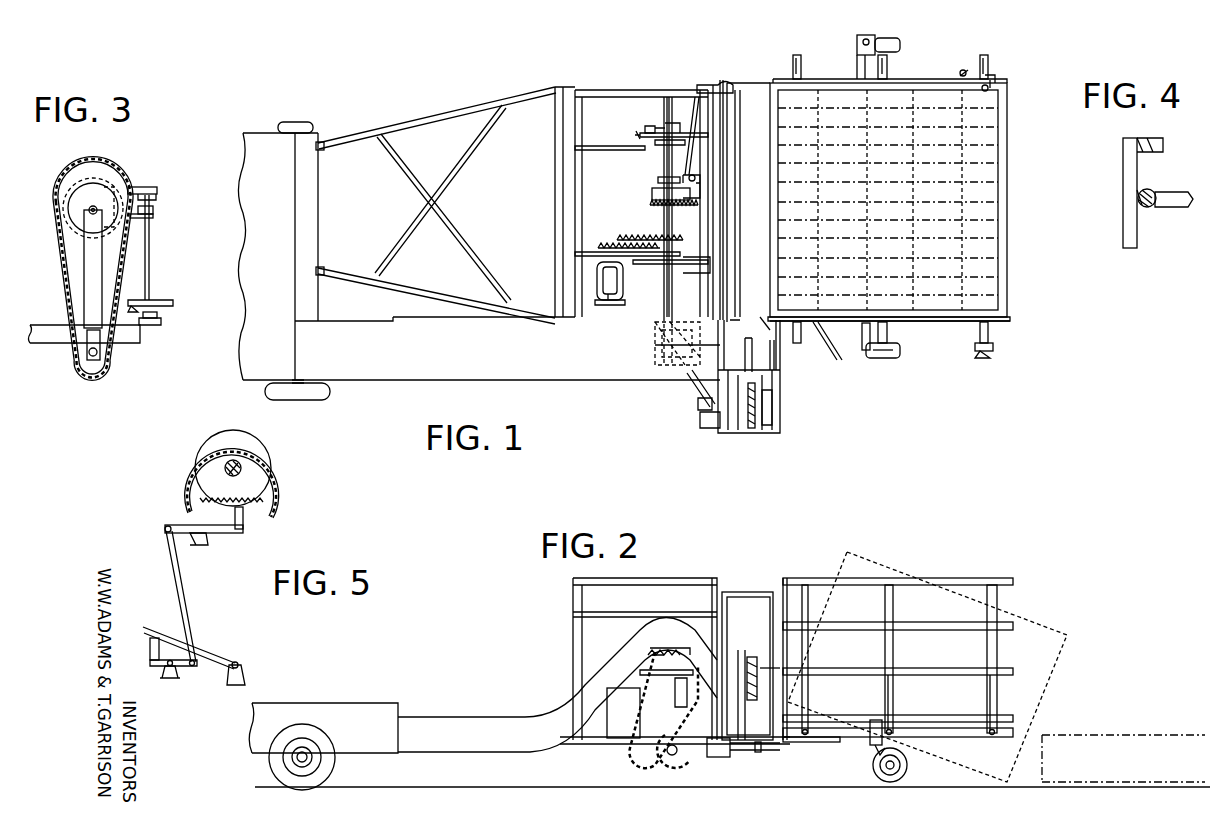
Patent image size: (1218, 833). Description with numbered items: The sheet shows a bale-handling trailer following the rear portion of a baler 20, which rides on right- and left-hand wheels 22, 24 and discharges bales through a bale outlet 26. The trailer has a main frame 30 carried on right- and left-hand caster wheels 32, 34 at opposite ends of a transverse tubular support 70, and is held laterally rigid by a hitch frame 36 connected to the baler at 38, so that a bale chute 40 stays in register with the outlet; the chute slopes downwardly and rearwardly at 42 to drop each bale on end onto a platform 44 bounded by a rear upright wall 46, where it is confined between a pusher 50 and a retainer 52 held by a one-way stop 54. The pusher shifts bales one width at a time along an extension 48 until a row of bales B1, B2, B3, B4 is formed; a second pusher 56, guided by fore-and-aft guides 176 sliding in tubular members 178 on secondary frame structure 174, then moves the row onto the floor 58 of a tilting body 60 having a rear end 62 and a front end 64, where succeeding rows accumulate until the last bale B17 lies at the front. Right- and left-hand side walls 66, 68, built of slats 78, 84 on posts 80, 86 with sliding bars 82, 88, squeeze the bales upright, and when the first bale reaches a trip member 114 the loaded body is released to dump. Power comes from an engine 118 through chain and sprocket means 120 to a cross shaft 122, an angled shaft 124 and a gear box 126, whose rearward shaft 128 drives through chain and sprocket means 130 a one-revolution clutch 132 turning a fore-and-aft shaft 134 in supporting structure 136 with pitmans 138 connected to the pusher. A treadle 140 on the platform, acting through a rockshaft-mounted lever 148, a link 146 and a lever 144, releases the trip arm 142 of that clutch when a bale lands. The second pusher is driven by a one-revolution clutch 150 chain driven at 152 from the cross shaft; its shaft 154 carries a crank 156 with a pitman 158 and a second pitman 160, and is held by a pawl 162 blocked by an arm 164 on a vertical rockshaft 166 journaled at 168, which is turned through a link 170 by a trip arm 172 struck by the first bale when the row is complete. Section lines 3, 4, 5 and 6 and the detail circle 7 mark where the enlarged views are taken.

In FIG. 1, the rear portion of agricultural baler 20 is at (254, 280).
In FIG. 2, the rear portion of agricultural baler 20 is at (298, 702).
In FIG. 1, the right-hand wheel 22 is at (299, 122).
In FIG. 1, the left-hand wheel 24 is at (305, 400).
In FIG. 2, the left-hand wheel 24 is at (285, 786).
In FIG. 1, the bale outlet 26 is at (380, 381).
In FIG. 2, the bale outlet 26 is at (380, 704).
In FIG. 3, the main frame 30 is at (47, 341).
In FIG. 5, the main frame 30 is at (248, 680).
In FIG. 1, the main frame 30 is at (562, 87).
In FIG. 2, the main frame 30 is at (580, 738).
In FIG. 1, the right-hand caster wheel 32 is at (900, 45).
In FIG. 1, the left-hand caster wheel 34 is at (896, 358).
In FIG. 2, the left-hand caster wheel 34 is at (889, 782).
In FIG. 1, the hitch frame 36 is at (466, 105).
In FIG. 1, the hitch connection 38 is at (324, 148).
In FIG. 1, the bale chute 40 is at (466, 381).
In FIG. 2, the bale chute 40 is at (456, 717).
In FIG. 1, the downwardly sloping rear portion of bale chute 42 is at (655, 362).
In FIG. 2, the downwardly sloping rear portion of bale chute 42 is at (692, 625).
In FIG. 1, the platform means 44 is at (700, 394).
In FIG. 1, the rear upright wall 46 is at (770, 360).
In FIG. 1, the extension means 48 is at (745, 88).
In FIG. 1, the pusher 50 is at (777, 372).
In FIG. 2, the pusher 50 is at (757, 591).
In FIG. 1, the retainer 52 is at (731, 318).
In FIG. 1, the one-way stop 54 is at (768, 322).
In FIG. 1, the second pusher frame 56 is at (724, 173).
In FIG. 2, the second pusher frame 56 is at (718, 585).
In FIG. 4, the second pusher frame 56 is at (1178, 192).
In FIG. 1, the floor 58 is at (990, 271).
In FIG. 2, the floor 58 is at (950, 740).
In FIG. 1, the body 60 is at (1008, 86).
In FIG. 2, the body 60 is at (1008, 577).
In FIG. 1, the rear end of body 62 is at (1008, 110).
In FIG. 2, the rear end of body 62 is at (1025, 731).
In FIG. 1, the front end of floor 64 is at (768, 116).
In FIG. 1, the right-hand side wall 66 is at (900, 80).
In FIG. 1, the left-hand side wall 68 is at (890, 323).
In FIG. 2, the left-hand side wall 68 is at (968, 577).
In FIG. 1, the transverse tubular support 70 is at (862, 343).
In FIG. 2, the transverse tubular support 70 is at (870, 752).
In FIG. 1, the horizontal slats 78 is at (992, 80).
In FIG. 1, the posts 80 is at (992, 76).
In FIG. 1, the laterally extending bars 82 is at (988, 55).
In FIG. 1, the horizontal slats 84 is at (1010, 321).
In FIG. 2, the horizontal slats 84 is at (1010, 622).
In FIG. 1, the posts 86 is at (985, 356).
In FIG. 2, the posts 86 is at (893, 607).
In FIG. 1, the laterally extending bars 88 is at (993, 345).
In FIG. 2, the laterally extending bars 88 is at (993, 737).
In FIG. 1, the trip member 114 is at (982, 90).
In FIG. 1, the internal combustion engine 118 is at (596, 280).
In FIG. 2, the internal combustion engine 118 is at (612, 733).
In FIG. 1, the chain and sprocket means 120 is at (625, 238).
In FIG. 2, the chain and sprocket means 120 is at (650, 762).
In FIG. 3, the cross shaft 122 is at (83, 366).
In FIG. 1, the cross shaft 122 is at (655, 340).
In FIG. 1, the angled shaft 124 is at (699, 408).
In FIG. 2, the angled shaft 124 is at (692, 760).
In FIG. 1, the gear box 126 is at (706, 428).
In FIG. 2, the gear box 126 is at (714, 757).
In FIG. 2, the rearwardly extending shaft 128 is at (758, 752).
In FIG. 5, the chain and sprocket means 130 is at (205, 431).
In FIG. 2, the chain and sprocket means 130 is at (762, 752).
In FIG. 5, the one-revolution clutch 132 is at (208, 452).
In FIG. 1, the one-revolution clutch 132 is at (752, 425).
In FIG. 2, the one-revolution clutch 132 is at (751, 656).
In FIG. 5, the fore-and-aft shaft 134 is at (243, 468).
In FIG. 2, the supporting structure 136 is at (770, 667).
In FIG. 1, the pitmans 138 is at (773, 420).
In FIG. 5, the treadle 140 is at (207, 652).
In FIG. 5, the trip arm 142 is at (243, 524).
In FIG. 5, the lever 144 is at (178, 527).
In FIG. 5, the link 146 is at (186, 602).
In FIG. 1, the link 146 is at (752, 350).
In FIG. 5, the rockshaft-mounted lever 148 is at (178, 672).
In FIG. 3, the one-revolution clutch 150 is at (82, 176).
In FIG. 1, the one-revolution clutch 150 is at (652, 192).
In FIG. 2, the one-revolution clutch 150 is at (668, 652).
In FIG. 3, the chain drive 152 is at (60, 280).
In FIG. 3, the shaft 154 is at (88, 211).
In FIG. 1, the shaft 154 is at (660, 160).
In FIG. 1, the crank 156 is at (636, 135).
In FIG. 1, the pitman 158 is at (655, 130).
In FIG. 1, the second pitman 160 is at (690, 265).
In FIG. 3, the clutch-carried pawl 162 is at (156, 208).
In FIG. 3, the arm 164 is at (156, 218).
In FIG. 1, the arm 164 is at (703, 192).
In FIG. 3, the vertical rockshaft 166 is at (150, 252).
In FIG. 3, the journals 168 is at (151, 186).
In FIG. 3, the link 170 is at (162, 299).
In FIG. 1, the link 170 is at (695, 147).
In FIG. 1, the trip arm 172 is at (712, 79).
In FIG. 1, the secondary frame structure 174 is at (648, 88).
In FIG. 4, the secondary frame structure 174 is at (1128, 170).
In FIG. 1, the fore-and-aft guides 176 is at (590, 88).
In FIG. 4, the fore-and-aft guides 176 is at (1152, 189).
In FIG. 4, the tubular members 178 is at (1148, 206).
In FIG. 1, the section line 3— 3 is at (642, 215).
In FIG. 1, the section line 4— 4 is at (632, 78).
In FIG. 1, the section line 5— 5 is at (750, 329).
In FIG. 1, the section line 6 is at (738, 61).
In FIG. 1, the detail 7 is at (732, 363).
In FIG. 1, the first bale B1 is at (985, 142).
In FIG. 1, the second bale B2 is at (990, 200).
In FIG. 1, the third bale B3 is at (985, 259).
In FIG. 1, the fourth bale B4 is at (968, 302).
In FIG. 1, the last bale B17 is at (802, 78).